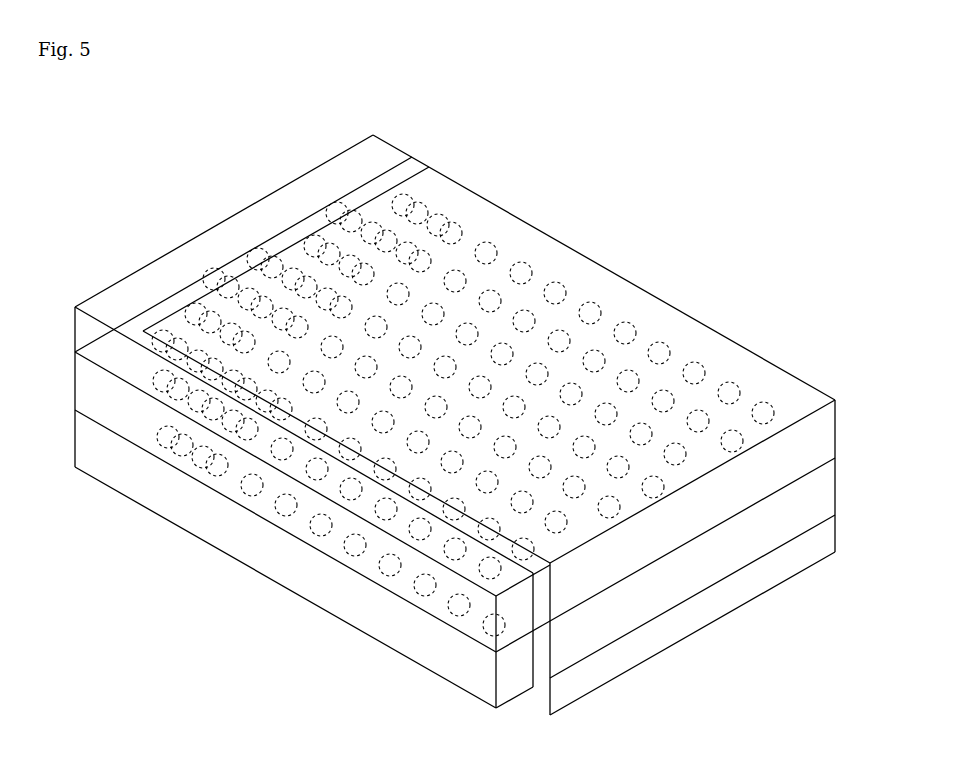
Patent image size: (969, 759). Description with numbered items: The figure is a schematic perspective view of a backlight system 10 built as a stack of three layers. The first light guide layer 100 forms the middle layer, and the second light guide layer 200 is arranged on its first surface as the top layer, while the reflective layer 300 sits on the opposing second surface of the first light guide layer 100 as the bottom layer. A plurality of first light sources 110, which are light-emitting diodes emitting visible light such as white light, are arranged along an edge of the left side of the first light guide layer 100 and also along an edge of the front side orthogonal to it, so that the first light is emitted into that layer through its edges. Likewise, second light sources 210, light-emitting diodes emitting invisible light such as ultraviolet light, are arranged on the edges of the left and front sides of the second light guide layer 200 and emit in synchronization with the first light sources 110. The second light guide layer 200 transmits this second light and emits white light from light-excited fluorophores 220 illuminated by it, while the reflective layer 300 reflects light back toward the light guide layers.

The backlight system 10 is at (712, 154).
The first light guide layer 100 is at (672, 592).
The first light sources 110 is at (396, 250).
The second light guide layer 200 is at (706, 341).
The second light sources 210 is at (400, 172).
The light-excited fluorophores 220 is at (531, 258).
The reflective layer 300 is at (612, 667).